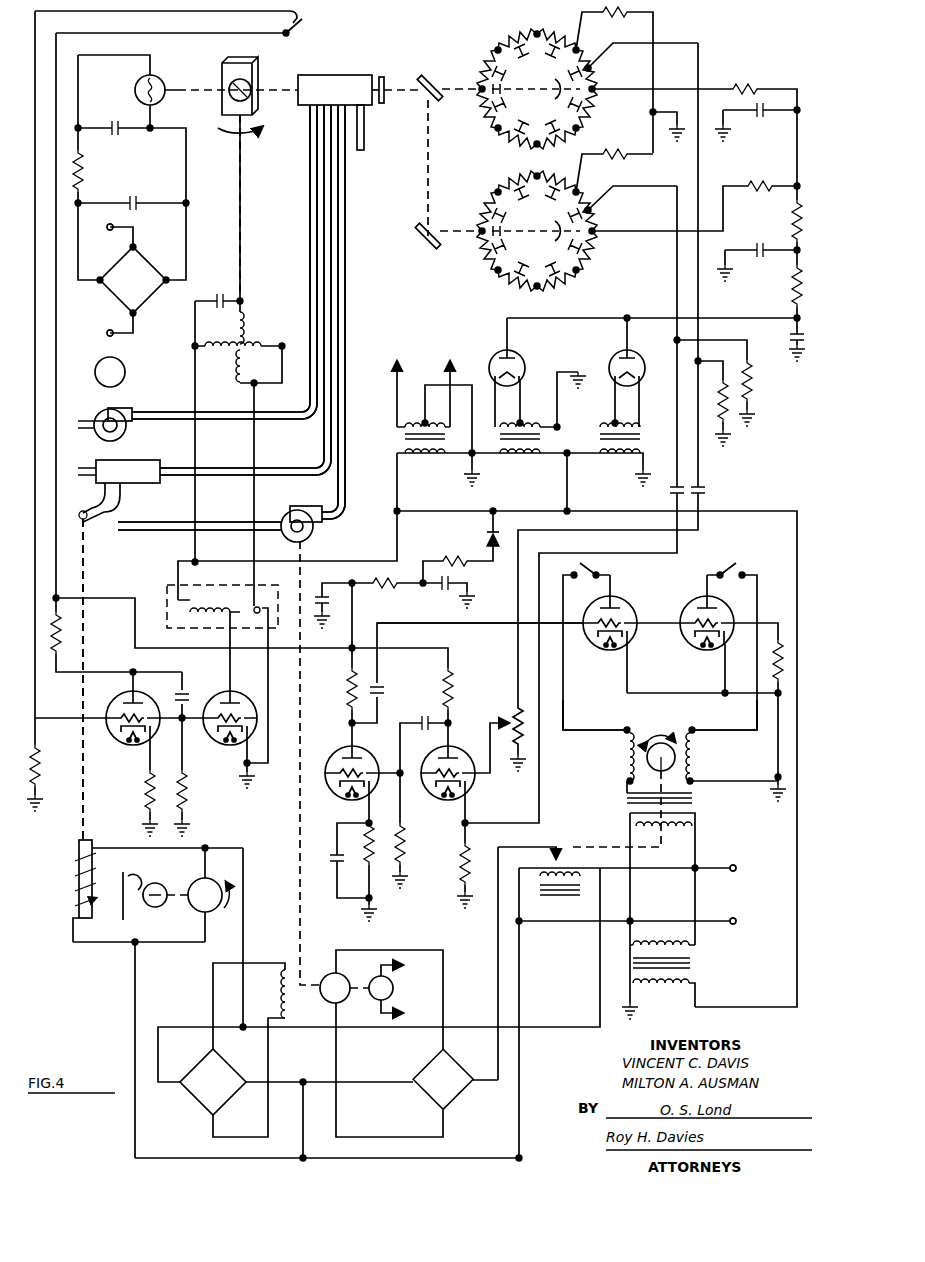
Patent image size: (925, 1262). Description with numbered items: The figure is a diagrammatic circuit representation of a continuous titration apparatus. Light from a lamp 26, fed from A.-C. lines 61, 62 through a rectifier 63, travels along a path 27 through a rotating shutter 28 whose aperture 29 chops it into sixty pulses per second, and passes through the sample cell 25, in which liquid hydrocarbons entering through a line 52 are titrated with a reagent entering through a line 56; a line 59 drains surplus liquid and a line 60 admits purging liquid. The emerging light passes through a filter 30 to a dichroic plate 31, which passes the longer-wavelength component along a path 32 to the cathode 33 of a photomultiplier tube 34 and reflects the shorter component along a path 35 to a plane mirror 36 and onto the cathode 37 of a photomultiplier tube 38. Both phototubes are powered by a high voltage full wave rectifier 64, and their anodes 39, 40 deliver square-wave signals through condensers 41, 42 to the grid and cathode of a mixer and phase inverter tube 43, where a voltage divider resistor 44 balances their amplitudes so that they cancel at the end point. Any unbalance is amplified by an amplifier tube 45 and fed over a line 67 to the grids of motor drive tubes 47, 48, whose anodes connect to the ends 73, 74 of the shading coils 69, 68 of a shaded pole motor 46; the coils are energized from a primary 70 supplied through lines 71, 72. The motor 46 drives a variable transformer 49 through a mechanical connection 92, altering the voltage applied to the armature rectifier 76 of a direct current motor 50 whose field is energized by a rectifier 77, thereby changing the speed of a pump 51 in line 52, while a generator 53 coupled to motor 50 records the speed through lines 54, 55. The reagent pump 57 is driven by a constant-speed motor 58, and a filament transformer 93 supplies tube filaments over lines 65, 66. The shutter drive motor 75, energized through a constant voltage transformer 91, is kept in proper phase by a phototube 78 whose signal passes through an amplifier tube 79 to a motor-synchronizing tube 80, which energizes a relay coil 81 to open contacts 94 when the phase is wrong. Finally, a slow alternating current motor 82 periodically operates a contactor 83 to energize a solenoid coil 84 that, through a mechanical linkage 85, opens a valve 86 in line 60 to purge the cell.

The sample cell 25 is at (345, 99).
The lamp 26 is at (137, 84).
The path 27 is at (199, 88).
The rotating shutter 28 is at (220, 104).
The aperture 29 is at (250, 82).
The filter 30 is at (386, 78).
The dichroic plate 31 is at (446, 80).
The path 32 is at (465, 95).
The cathode 33 is at (553, 90).
The photomultiplier tube 34 is at (547, 115).
The path 35 is at (427, 185).
The plane mirror 36 is at (426, 250).
The cathode 37 is at (553, 232).
The photomultiplier tube 38 is at (547, 257).
The anode 39 is at (591, 66).
The anode 40 is at (591, 210).
The condenser 41 is at (706, 492).
The condenser 42 is at (683, 490).
The mixer and phase inverter tube 43 is at (455, 798).
The voltage divider resistor 44 is at (517, 720).
The amplifier tube 45 is at (328, 778).
The shaded pole motor 46 is at (667, 740).
The motor drive tube 47 is at (628, 605).
The motor drive tube 48 is at (690, 638).
The variable transformer 49 is at (552, 862).
The direct current motor 50 is at (340, 972).
The pump 51 is at (296, 508).
The line 52 is at (130, 522).
The generator 53 is at (394, 988).
The line 54 is at (408, 1020).
The line 55 is at (404, 960).
The line 56 is at (310, 205).
The pump 57 is at (124, 412).
The motor 58 is at (126, 367).
The line 59 is at (365, 140).
The line 60 is at (340, 235).
The A.-C. line 61 is at (108, 232).
The A.-C. line 62 is at (108, 332).
The rectifier 63 is at (143, 290).
The high voltage full wave rectifier 64 is at (500, 340).
The line 65 is at (396, 350).
The line 66 is at (450, 350).
The line 67 is at (450, 623).
The shading coil 68 is at (694, 752).
The shading coil 69 is at (622, 752).
The primary 70 is at (680, 830).
The line 71 is at (737, 866).
The line 72 is at (737, 919).
The end 73 is at (623, 728).
The end 74 is at (695, 728).
The shutter drive motor 75 is at (246, 345).
The armature rectifier 76 is at (453, 1090).
The rectifier 77 is at (223, 1092).
The phototube 78 is at (304, 28).
The amplifier tube 79 is at (115, 735).
The motor-synchronizing tube 80 is at (215, 732).
The relay coil 81 is at (195, 618).
The alternating current motor 82 is at (198, 912).
The contactor 83 is at (135, 890).
The solenoid coil 84 is at (78, 878).
The mechanical linkage 85 is at (84, 590).
The valve 86 is at (130, 460).
The constant voltage transformer 91 is at (698, 940).
The mechanical connection 92 is at (618, 845).
The filament transformer 93 is at (392, 418).
The contacts 94 is at (258, 605).